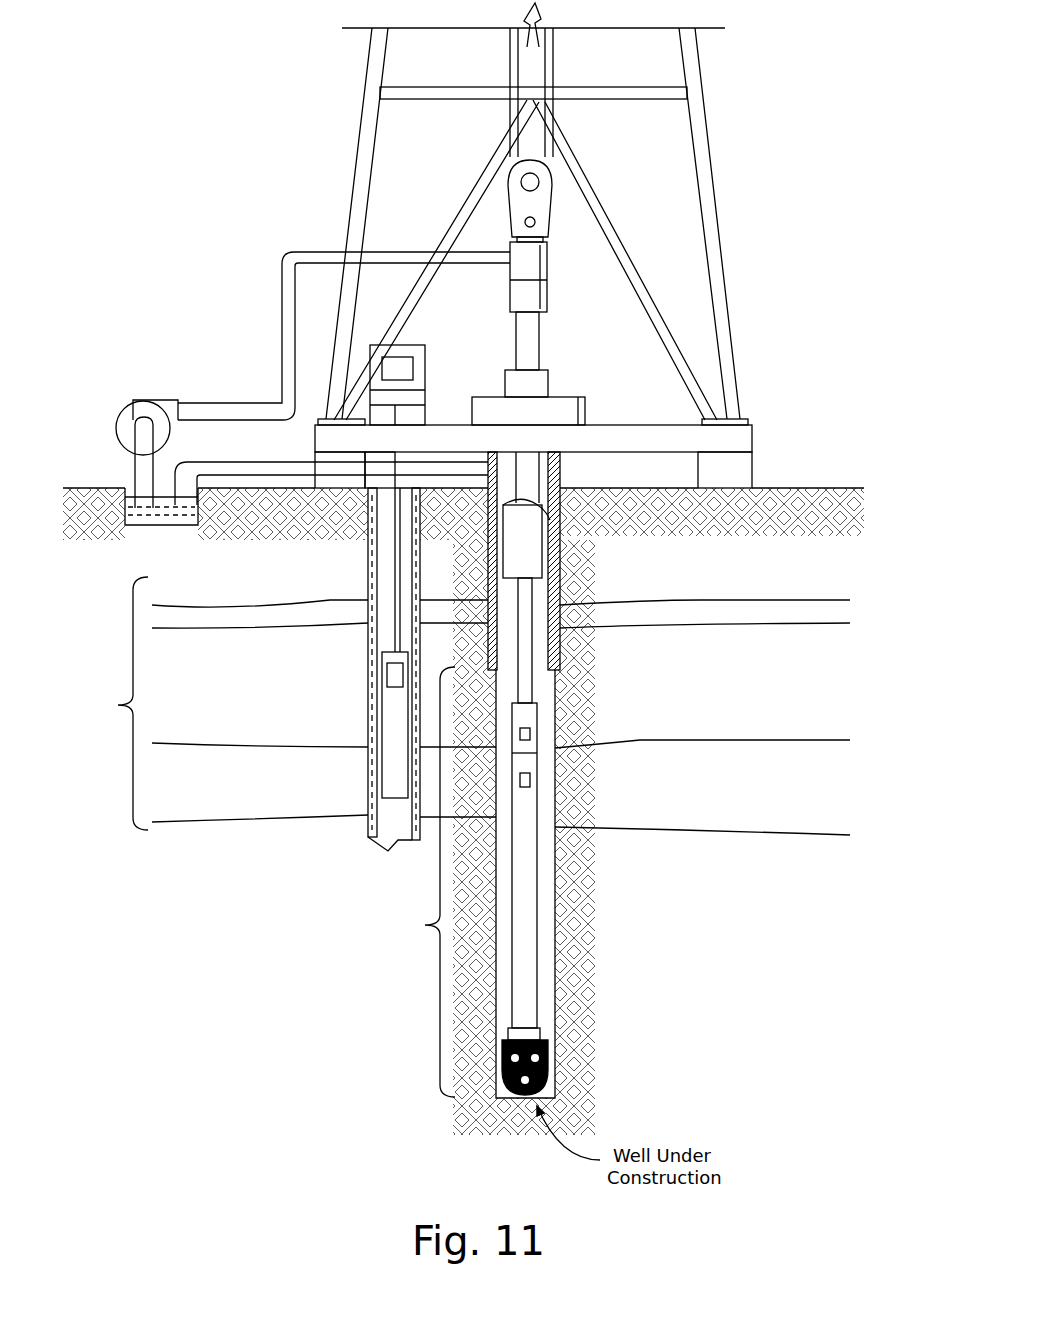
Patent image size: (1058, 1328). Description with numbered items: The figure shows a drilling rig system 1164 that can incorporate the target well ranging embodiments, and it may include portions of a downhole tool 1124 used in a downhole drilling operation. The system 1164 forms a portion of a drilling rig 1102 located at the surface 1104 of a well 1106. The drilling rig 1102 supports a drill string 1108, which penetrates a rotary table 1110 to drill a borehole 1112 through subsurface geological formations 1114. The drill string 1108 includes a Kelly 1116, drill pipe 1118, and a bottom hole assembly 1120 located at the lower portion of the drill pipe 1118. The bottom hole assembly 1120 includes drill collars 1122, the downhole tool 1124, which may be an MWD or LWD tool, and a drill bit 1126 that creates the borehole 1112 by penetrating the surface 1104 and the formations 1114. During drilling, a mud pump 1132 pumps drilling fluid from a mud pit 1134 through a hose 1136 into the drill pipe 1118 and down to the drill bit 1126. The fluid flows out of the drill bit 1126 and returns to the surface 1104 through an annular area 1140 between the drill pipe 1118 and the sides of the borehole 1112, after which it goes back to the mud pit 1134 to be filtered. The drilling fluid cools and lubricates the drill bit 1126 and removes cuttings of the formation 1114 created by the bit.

The drilling rig 1102 is at (718, 166).
The surface 1104 is at (834, 488).
The well 1106 is at (570, 484).
The drill string 1108 is at (546, 890).
The rotary table 1110 is at (587, 403).
The borehole 1112 is at (556, 963).
The subsurface geological formations 1114 is at (455, 669).
The Kelly 1116 is at (540, 335).
The drill pipe 1118 is at (532, 688).
The bottom hole assembly 1120 is at (411, 882).
The drill collars 1122 is at (540, 568).
The downhole tool 1124 is at (525, 763).
The drill bit 1126 is at (542, 1052).
The mud pump 1132 is at (152, 402).
The mud pit 1134 is at (128, 493).
The hose 1136 is at (280, 307).
The annular area 1140 is at (545, 710).
The drilling rig system 1164 is at (263, 140).